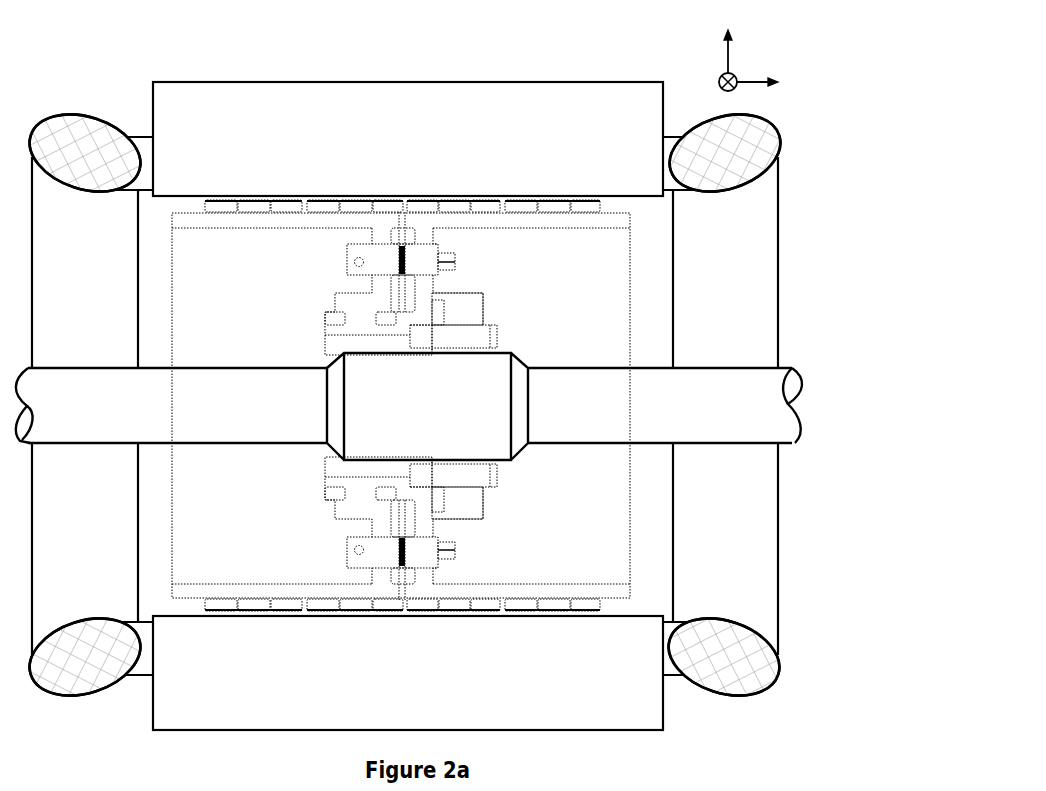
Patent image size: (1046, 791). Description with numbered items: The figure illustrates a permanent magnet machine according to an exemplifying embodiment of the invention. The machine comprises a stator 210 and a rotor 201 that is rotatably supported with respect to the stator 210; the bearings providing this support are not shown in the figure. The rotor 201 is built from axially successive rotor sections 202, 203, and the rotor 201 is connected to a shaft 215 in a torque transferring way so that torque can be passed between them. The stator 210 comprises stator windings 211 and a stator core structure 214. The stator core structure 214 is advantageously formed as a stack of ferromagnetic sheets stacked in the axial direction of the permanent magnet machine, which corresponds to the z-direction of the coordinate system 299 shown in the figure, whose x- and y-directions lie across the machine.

The rotor 201 is at (609, 561).
The rotor section 202 is at (567, 302).
The rotor section 203 is at (266, 316).
The stator 210 is at (405, 383).
The stator windings 211 is at (72, 117).
The stator core structure 214 is at (419, 151).
The shaft 215 is at (256, 417).
The coordinate system 299 is at (779, 66).